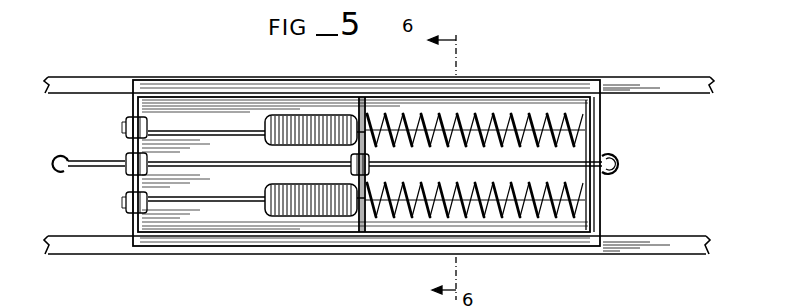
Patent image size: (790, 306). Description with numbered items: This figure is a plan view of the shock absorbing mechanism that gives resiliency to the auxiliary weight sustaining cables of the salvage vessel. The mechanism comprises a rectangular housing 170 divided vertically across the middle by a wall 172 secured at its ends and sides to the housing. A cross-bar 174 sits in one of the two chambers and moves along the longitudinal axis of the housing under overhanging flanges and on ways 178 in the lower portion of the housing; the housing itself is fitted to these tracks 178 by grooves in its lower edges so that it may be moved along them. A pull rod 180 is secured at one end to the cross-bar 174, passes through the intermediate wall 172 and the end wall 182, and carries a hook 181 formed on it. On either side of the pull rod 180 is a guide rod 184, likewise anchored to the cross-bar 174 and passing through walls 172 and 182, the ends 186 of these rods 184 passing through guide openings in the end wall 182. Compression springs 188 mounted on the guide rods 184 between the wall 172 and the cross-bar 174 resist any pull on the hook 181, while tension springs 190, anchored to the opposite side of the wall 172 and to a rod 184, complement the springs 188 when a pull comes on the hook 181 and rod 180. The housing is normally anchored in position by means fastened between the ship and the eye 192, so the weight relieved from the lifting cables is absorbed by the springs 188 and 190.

The rectangular housing 170 is at (168, 250).
The middle wall 172 is at (363, 222).
The cross-bar 174 is at (582, 147).
The ways 178 is at (682, 90).
The pull rod 180 is at (253, 161).
The hook 181 is at (62, 172).
The end wall 182 is at (135, 108).
The guide rod 184 is at (192, 131).
The ends of bars 186 is at (125, 124).
The compression springs 188 is at (533, 116).
The tension spring 190 is at (293, 115).
The eye 192 is at (621, 168).